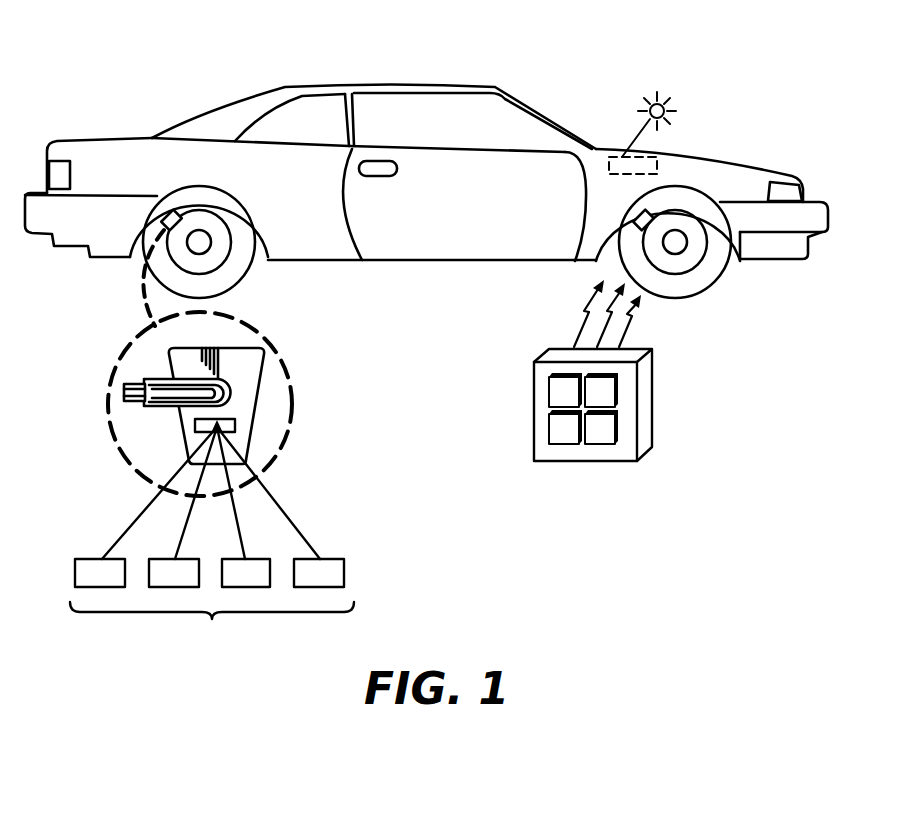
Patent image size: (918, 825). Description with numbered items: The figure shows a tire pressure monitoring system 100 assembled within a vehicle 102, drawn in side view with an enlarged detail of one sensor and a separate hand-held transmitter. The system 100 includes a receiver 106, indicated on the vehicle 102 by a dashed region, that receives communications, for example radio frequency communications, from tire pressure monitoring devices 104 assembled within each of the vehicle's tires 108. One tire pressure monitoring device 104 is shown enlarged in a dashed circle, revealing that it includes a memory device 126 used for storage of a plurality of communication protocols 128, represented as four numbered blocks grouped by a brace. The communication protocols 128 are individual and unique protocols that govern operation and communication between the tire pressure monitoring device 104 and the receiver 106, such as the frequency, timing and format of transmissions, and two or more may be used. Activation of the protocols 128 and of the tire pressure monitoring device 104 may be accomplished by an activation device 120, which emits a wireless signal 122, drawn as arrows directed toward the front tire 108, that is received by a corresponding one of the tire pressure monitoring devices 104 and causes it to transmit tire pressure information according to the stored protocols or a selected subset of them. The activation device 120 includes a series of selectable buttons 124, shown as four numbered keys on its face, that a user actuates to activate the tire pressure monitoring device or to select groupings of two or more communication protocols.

The tire pressure monitoring system 100 is at (768, 127).
The vehicle 102 is at (297, 90).
The tire pressure monitoring device 104 is at (165, 225).
The receiver 106 is at (655, 167).
The tire 108 is at (228, 276).
The activation device 120 is at (591, 430).
The wireless signal 122 is at (677, 337).
The selectable buttons 124 is at (538, 436).
The memory device 126 is at (223, 427).
The communication protocols 128 is at (212, 535).